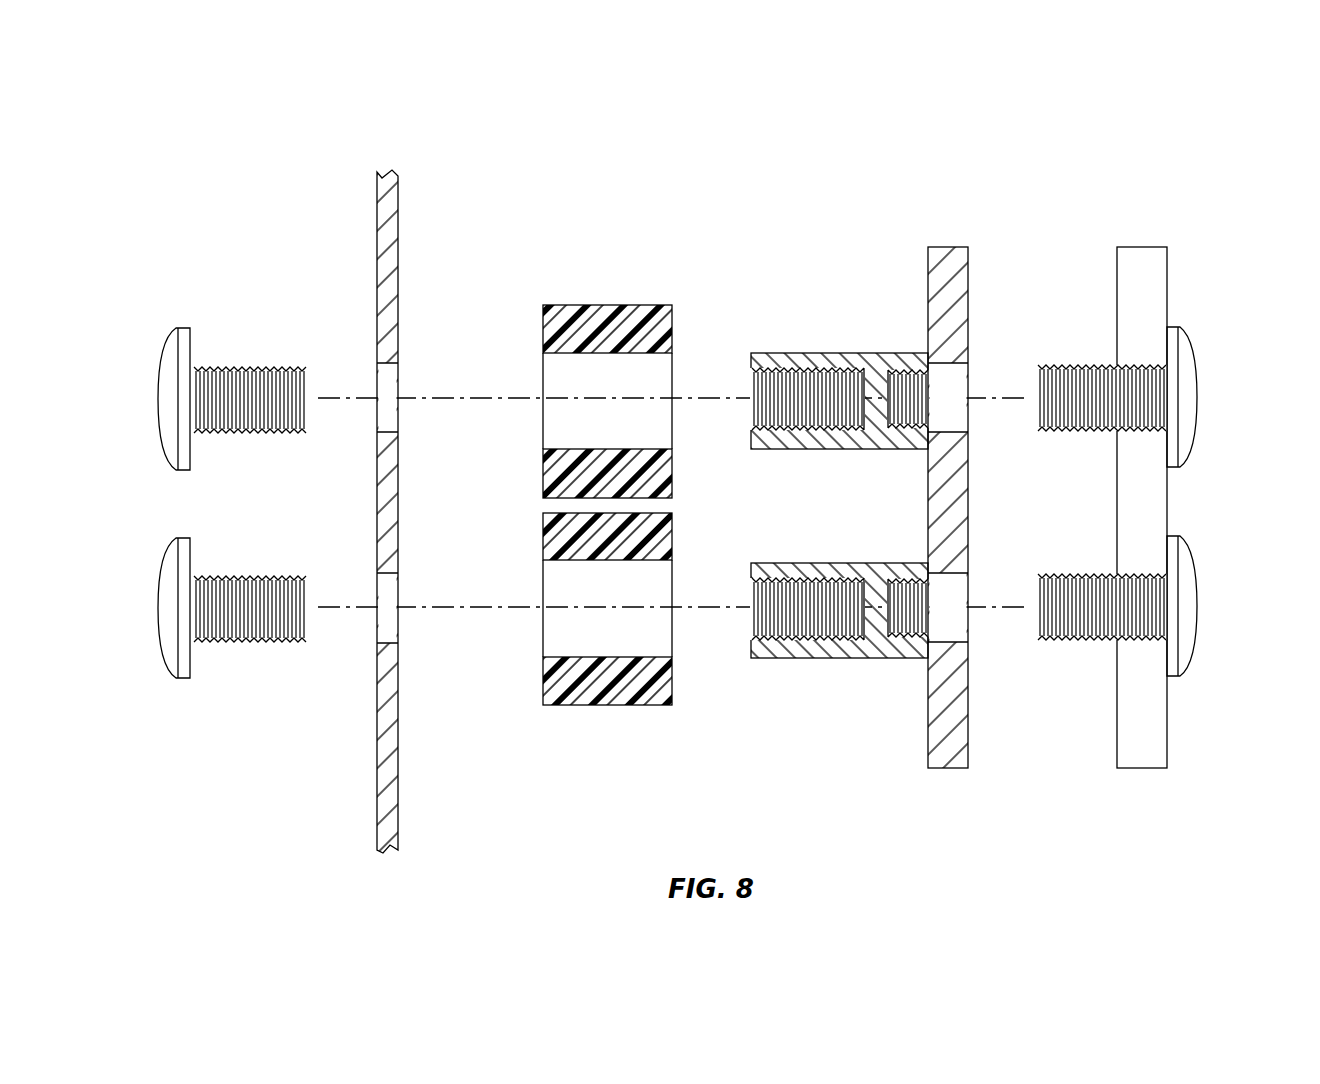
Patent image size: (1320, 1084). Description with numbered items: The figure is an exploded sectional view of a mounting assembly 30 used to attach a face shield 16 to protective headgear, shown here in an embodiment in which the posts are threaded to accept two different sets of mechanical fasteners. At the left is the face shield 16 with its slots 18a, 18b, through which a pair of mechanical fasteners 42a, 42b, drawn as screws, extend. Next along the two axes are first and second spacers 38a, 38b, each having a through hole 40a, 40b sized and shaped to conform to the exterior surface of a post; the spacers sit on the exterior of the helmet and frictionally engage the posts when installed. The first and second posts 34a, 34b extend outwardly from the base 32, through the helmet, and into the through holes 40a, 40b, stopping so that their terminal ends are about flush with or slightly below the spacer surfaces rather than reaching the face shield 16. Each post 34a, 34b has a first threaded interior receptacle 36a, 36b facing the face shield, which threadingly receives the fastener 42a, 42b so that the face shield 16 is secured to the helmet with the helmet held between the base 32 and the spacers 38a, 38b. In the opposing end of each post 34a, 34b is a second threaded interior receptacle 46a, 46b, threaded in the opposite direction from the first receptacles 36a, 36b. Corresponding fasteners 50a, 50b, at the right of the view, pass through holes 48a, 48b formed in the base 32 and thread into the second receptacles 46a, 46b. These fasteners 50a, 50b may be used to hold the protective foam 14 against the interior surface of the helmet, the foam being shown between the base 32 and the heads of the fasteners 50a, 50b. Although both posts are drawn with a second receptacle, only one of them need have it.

The mounting assembly 30 is at (657, 152).
The protective foam 14 is at (1145, 293).
The face shield 16 is at (385, 240).
The slot 18a is at (382, 368).
The slot 18b is at (382, 626).
The base 32 is at (945, 275).
The first post 34a is at (820, 354).
The second post 34b is at (805, 658).
The first threaded interior receptacle 36a is at (762, 410).
The first threaded interior receptacle 36b is at (762, 620).
The first spacer 38a is at (612, 306).
The second spacer 38b is at (590, 706).
The through hole 40a is at (553, 376).
The through hole 40b is at (553, 626).
The mechanical fastener 42a is at (178, 377).
The mechanical fastener 42b is at (178, 586).
The second threaded interior receptacle 46a is at (905, 378).
The second threaded interior receptacle 46b is at (893, 640).
The hole 48a is at (955, 385).
The hole 48b is at (958, 625).
The fastener 50a is at (1195, 385).
The fastener 50b is at (1195, 590).